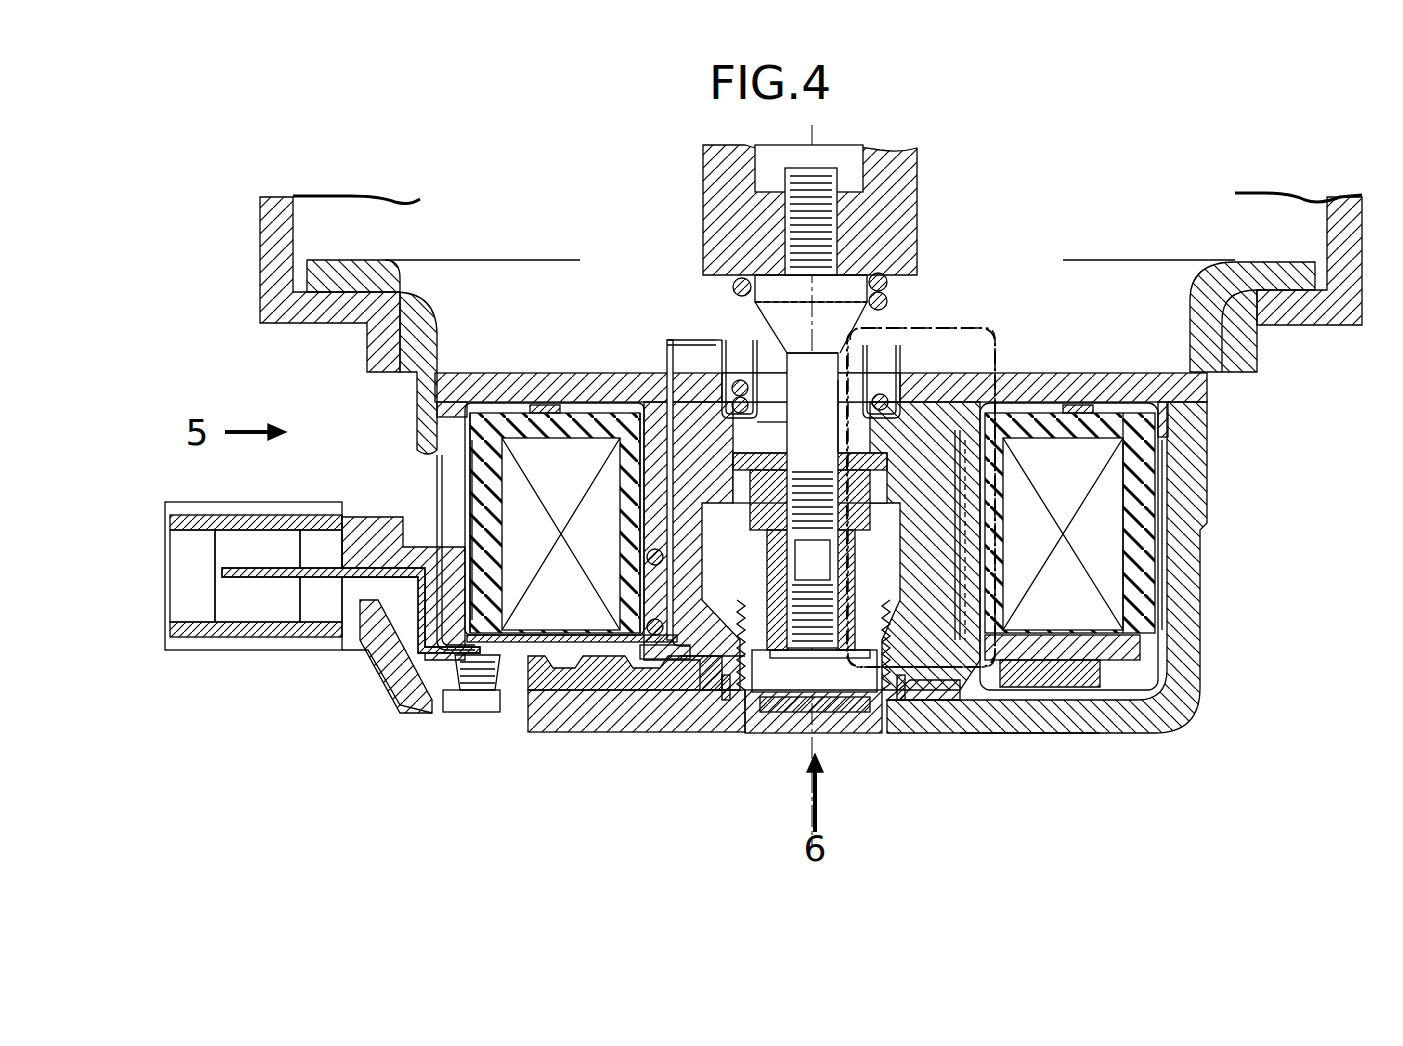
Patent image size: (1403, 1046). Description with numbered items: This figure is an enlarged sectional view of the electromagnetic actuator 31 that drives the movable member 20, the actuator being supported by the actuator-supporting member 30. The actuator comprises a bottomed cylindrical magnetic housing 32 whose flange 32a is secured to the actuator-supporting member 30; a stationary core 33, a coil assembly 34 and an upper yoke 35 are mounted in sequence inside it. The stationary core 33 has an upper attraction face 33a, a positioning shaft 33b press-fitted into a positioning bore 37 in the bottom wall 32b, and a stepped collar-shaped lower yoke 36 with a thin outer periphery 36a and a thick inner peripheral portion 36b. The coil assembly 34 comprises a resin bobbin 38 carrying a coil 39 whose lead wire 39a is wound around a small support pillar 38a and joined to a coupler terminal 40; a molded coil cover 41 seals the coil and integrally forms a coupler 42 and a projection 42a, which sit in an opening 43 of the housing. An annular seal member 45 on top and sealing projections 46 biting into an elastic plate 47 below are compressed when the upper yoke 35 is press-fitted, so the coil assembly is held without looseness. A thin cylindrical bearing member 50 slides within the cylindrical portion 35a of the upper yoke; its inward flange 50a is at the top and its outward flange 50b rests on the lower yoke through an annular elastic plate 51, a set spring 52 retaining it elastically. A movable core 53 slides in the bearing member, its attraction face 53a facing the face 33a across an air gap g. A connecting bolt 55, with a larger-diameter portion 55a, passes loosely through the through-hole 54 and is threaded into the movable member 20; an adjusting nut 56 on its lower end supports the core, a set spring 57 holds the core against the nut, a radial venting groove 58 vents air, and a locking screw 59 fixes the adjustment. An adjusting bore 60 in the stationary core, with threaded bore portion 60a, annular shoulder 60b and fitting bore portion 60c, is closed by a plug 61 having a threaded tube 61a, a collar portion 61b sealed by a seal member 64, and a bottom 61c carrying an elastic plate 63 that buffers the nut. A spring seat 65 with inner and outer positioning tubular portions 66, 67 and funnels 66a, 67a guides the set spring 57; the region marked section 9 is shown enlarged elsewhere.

The movable member 20 is at (890, 173).
The actuator-supporting member 30 is at (262, 216).
The electromagnetic actuator 31 is at (1210, 478).
The housing 32 is at (1192, 577).
The flange 32a is at (1282, 272).
The bottom wall 32b is at (980, 733).
The stationary core 33 is at (985, 570).
The attraction face 33a is at (1020, 600).
The positioning shaft 33b is at (932, 733).
The coil assembly 34 is at (530, 430).
The upper yoke 35 is at (1040, 372).
The cylindrical portion 35a is at (1010, 475).
The lower yoke 36 is at (675, 783).
The thin outer periphery 36a is at (582, 733).
The thick inner peripheral portion 36b is at (650, 733).
The positioning bore 37 is at (950, 733).
The bobbin 38 is at (620, 490).
The small support pillar 38a is at (478, 712).
The coil 39 is at (550, 593).
The lead wire 39a is at (425, 700).
The coupler terminal 40 is at (248, 577).
The coil cover 41 is at (475, 400).
The coupler 42 is at (250, 515).
The projection 42a is at (390, 695).
The opening 43 is at (430, 458).
The annular seal member 45 is at (545, 405).
The sealing projections 46 is at (1062, 695).
The elastic plate 47 is at (1015, 715).
The bearing member 50 is at (666, 400).
The flange 50a is at (680, 340).
The flange 50b is at (625, 637).
The annular elastic plate 51 is at (688, 730).
The set spring 52 is at (648, 557).
The movable core 53 is at (950, 376).
The attraction face 53a is at (878, 522).
The through-hole 54 is at (865, 425).
The connecting bolt 55 is at (828, 377).
The larger-diameter portion 55a is at (768, 283).
The adjusting nut 56 is at (765, 600).
The set spring 57 is at (890, 296).
The radial venting groove 58 is at (735, 458).
The locking screw 59 is at (830, 658).
The adjusting bore 60 is at (898, 735).
The threaded bore portion 60a is at (740, 560).
The annular shoulder 60b is at (758, 690).
The fitting bore portion 60c is at (735, 728).
The plug 61 is at (806, 782).
The threaded tube 61a is at (975, 515).
The collar portion 61b is at (905, 680).
The bottom 61c is at (778, 735).
The elastic plate 63 is at (858, 716).
The seal member 64 is at (690, 652).
The annular spring seat 65 is at (760, 430).
The inner positioning tubular portion 66 is at (812, 440).
The funnel 66a is at (779, 352).
The outer positioning tubular portion 67 is at (898, 395).
The funnel 67a is at (735, 345).
The air gap g is at (978, 545).
The section 9 is at (985, 320).